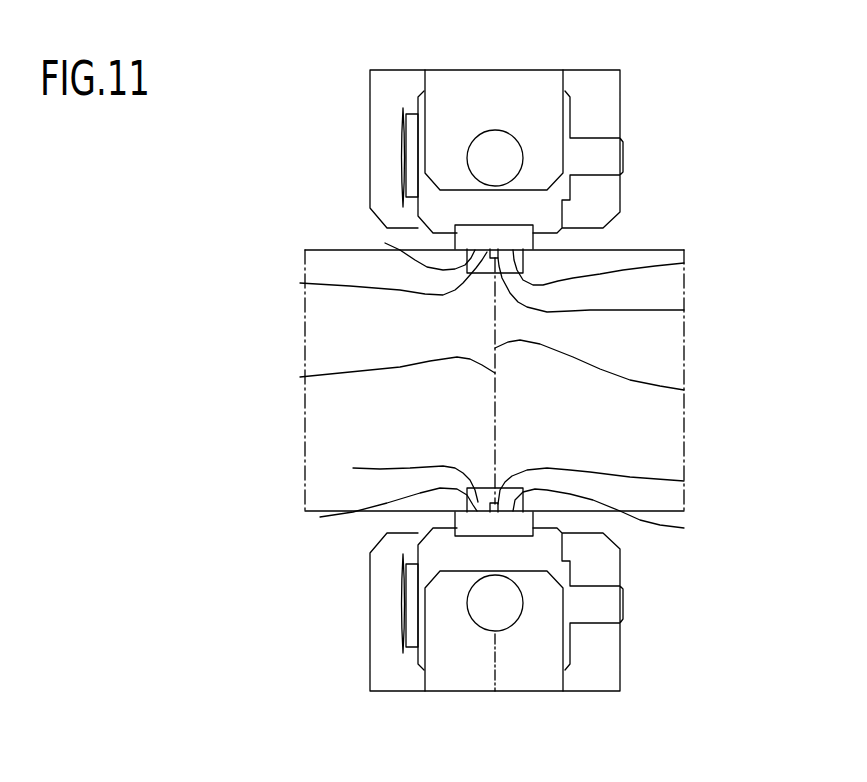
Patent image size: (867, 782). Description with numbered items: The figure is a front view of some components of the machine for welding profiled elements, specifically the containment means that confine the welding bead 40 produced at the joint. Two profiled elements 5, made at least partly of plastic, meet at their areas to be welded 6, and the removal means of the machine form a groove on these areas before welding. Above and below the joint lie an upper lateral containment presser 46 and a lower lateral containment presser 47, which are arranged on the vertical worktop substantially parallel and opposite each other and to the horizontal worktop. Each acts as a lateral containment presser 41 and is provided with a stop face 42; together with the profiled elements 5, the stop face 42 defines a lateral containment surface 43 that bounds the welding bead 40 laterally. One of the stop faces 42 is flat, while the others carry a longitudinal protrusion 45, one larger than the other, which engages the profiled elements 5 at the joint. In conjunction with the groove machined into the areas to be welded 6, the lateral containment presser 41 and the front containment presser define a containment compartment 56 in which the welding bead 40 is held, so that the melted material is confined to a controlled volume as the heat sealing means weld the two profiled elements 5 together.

The profiled element 5 is at (367, 337).
The area to be welded 6 is at (300, 377).
The welding bead 40 is at (545, 380).
The lateral containment presser 41 is at (392, 148).
The stop face 42 is at (397, 123).
The lateral containment surface 43 is at (300, 283).
The longitudinal protrusion 45 is at (684, 310).
The upper lateral containment presser 46 is at (480, 97).
The lower lateral containment presser 47 is at (452, 656).
The containment compartment 56 is at (385, 243).